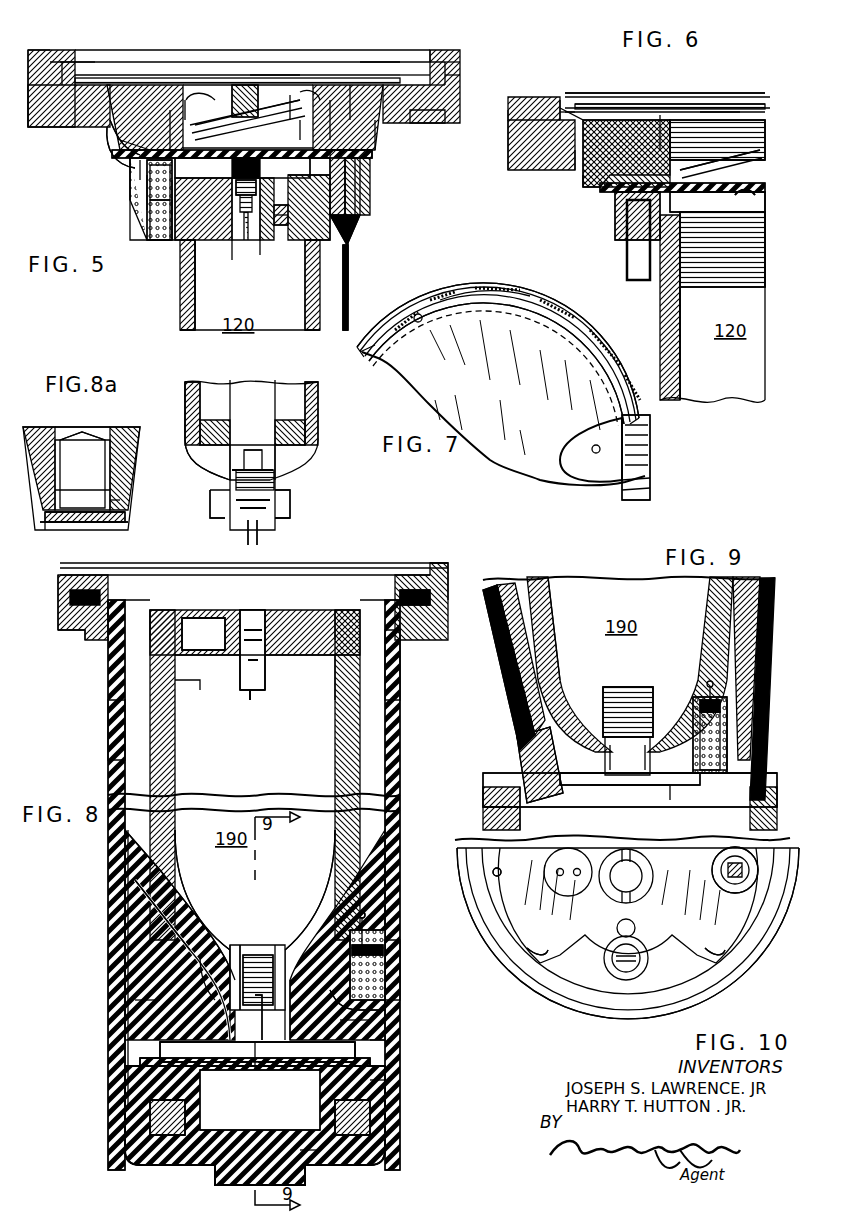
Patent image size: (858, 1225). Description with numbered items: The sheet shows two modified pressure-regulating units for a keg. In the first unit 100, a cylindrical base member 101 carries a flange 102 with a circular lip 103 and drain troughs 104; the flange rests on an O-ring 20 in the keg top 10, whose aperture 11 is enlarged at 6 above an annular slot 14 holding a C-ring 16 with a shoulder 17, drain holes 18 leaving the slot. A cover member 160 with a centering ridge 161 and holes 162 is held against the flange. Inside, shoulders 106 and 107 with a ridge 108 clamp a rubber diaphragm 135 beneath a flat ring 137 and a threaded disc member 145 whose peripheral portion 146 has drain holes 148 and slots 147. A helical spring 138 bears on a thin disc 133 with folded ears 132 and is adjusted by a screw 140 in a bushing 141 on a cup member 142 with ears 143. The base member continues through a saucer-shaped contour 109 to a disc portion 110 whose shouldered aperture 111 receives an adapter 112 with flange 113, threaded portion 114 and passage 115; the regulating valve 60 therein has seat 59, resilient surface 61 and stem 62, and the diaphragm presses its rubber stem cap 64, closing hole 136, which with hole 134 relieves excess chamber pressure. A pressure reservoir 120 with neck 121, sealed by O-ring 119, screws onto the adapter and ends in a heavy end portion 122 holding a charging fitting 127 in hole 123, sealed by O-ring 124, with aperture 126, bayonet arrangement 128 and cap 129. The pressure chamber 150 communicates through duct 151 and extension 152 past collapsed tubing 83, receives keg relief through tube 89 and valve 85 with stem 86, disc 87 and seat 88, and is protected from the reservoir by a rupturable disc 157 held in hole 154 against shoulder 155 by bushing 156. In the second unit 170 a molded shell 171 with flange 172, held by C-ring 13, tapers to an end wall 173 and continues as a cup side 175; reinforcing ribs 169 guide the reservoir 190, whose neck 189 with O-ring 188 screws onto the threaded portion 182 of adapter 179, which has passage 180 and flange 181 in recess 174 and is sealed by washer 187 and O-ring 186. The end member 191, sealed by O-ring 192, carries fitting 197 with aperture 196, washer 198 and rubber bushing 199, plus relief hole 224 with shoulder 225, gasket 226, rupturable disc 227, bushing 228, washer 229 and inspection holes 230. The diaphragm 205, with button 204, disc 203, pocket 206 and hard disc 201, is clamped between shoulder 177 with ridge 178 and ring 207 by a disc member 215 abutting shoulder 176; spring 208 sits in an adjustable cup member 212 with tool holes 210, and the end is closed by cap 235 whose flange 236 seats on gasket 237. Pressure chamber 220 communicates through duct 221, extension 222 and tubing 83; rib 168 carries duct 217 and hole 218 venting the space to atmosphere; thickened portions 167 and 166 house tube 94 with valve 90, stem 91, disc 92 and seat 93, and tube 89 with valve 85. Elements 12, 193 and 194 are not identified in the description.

In FIG. 5, the enlarged aperture portion 6 is at (70, 60).
In FIG. 6, the enlarged aperture portion 6 is at (555, 95).
In FIG. 5, the central top portion of the keg 10 is at (38, 138).
In FIG. 8, the central top portion of the keg 10 is at (74, 643).
In FIG. 5, the aperture 11 is at (458, 72).
In FIG. 8, the aperture 11 is at (62, 600).
In FIG. 5, the end cap 12 is at (428, 128).
In FIG. 8, the C-ring 13 is at (435, 560).
In FIG. 5, the annular slot 14 is at (58, 52).
In FIG. 5, the C-ring 16 is at (88, 60).
In FIG. 6, the shoulder 17 is at (565, 98).
In FIG. 5, the hole 18 is at (435, 52).
In FIG. 5, the O-ring 20 is at (440, 92).
In FIG. 6, the O-ring 20 is at (575, 172).
In FIG. 8, the O-ring 20 is at (430, 620).
In FIG. 5, the frusto-conical seat 59 is at (242, 248).
In FIG. 5, the pressure-regulating valve 60 is at (247, 245).
In FIG. 8, the pressure-regulating valve 60 is at (258, 990).
In FIG. 5, the resilient frusto-conical surface 61 is at (236, 203).
In FIG. 5, the axial stem 62 is at (255, 163).
In FIG. 6, the axial stem 62 is at (725, 205).
In FIG. 8, the axial stem 62 is at (262, 1052).
In FIG. 9, the axial stem 62 is at (660, 790).
In FIG. 5, the stem cap 64 is at (238, 164).
In FIG. 6, the stem cap 64 is at (735, 200).
In FIG. 5, the collapsed rubber tubing 83 is at (350, 298).
In FIG. 9, the collapsed rubber tubing 83 is at (505, 660).
In FIG. 5, the valve 85 is at (150, 238).
In FIG. 9, the valve 85 is at (720, 697).
In FIG. 5, the axial stem 86 is at (165, 242).
In FIG. 9, the axial stem 86 is at (730, 724).
In FIG. 5, the small disc 87 is at (172, 245).
In FIG. 9, the small disc 87 is at (735, 768).
In FIG. 5, the flange 88 is at (186, 245).
In FIG. 9, the flange 88 is at (745, 785).
In FIG. 5, the rigid tube 89 is at (155, 242).
In FIG. 6, the rigid tube 89 is at (630, 266).
In FIG. 9, the rigid tube 89 is at (725, 704).
In FIG. 8, the valve 90 is at (365, 925).
In FIG. 8, the stem 91 is at (400, 972).
In FIG. 8, the disc 92 is at (400, 990).
In FIG. 8, the valve seat 93 is at (380, 1005).
In FIG. 8, the rigid tube 94 is at (385, 950).
In FIG. 10, the rigid tube 94 is at (748, 892).
In FIG. 5, the unit 100 is at (386, 227).
In FIG. 5, the base member 101 is at (378, 162).
In FIG. 5, the flange 102 is at (66, 127).
In FIG. 6, the flange 102 is at (515, 146).
In FIG. 6, the circular lip 103 is at (512, 122).
In FIG. 7, the circular lip 103 is at (568, 312).
In FIG. 5, the channel or trough 104 is at (462, 60).
In FIG. 7, the channel or trough 104 is at (650, 448).
In FIG. 5, the outer shoulder 106 is at (140, 168).
In FIG. 5, the inner shoulder 107 is at (160, 215).
In FIG. 8, the inner shoulder 107 is at (375, 1030).
In FIG. 5, the raised circular ridge 108 is at (150, 195).
In FIG. 5, the saucer-shaped contour 109 is at (368, 176).
In FIG. 5, the disc portion 110 is at (360, 197).
In FIG. 5, the shouldered aperture 111 is at (314, 162).
In FIG. 5, the cylindrical adapter 112 is at (224, 250).
In FIG. 5, the flange 113 is at (176, 162).
In FIG. 5, the externally threaded portion 114 is at (215, 245).
In FIG. 6, the externally threaded portion 114 is at (684, 312).
In FIG. 5, the passage 115 is at (262, 262).
In FIG. 5, the O-ring 119 is at (348, 238).
In FIG. 5, the pressure reservoir 120 is at (250, 325).
In FIG. 6, the pressure reservoir 120 is at (713, 343).
In FIG. 5, the neck 121 is at (350, 268).
In FIG. 8, the end portion 122 is at (318, 452).
In FIG. 8, the axial hole 123 is at (238, 455).
In FIG. 8, the O-ring 124 is at (295, 490).
In FIG. 8, the axial aperture 126 is at (254, 448).
In FIG. 8, the fitting 127 is at (285, 455).
In FIG. 8, the bayonet arrangement 128 is at (290, 516).
In FIG. 8, the cap 129 is at (212, 518).
In FIG. 5, the ears 132 is at (308, 130).
In FIG. 5, the thin disc 133 is at (335, 120).
In FIG. 6, the central hole 134 is at (745, 173).
In FIG. 5, the diaphragm 135 is at (150, 150).
In FIG. 6, the diaphragm 135 is at (618, 220).
In FIG. 6, the central hole 136 is at (742, 196).
In FIG. 5, the flat ring 137 is at (145, 182).
In FIG. 5, the helical spring 138 is at (293, 100).
In FIG. 5, the screw 140 is at (262, 78).
In FIG. 6, the screw 140 is at (735, 110).
In FIG. 5, the threaded bushing 141 is at (248, 118).
In FIG. 5, the cup member 142 is at (242, 90).
In FIG. 6, the cup member 142 is at (745, 140).
In FIG. 5, the ears 143 is at (172, 148).
In FIG. 5, the disc member 145 is at (115, 142).
In FIG. 6, the disc member 145 is at (588, 190).
In FIG. 5, the peripheral portion 146 is at (128, 160).
In FIG. 5, the slots 147 is at (188, 110).
In FIG. 6, the slots 147 is at (668, 130).
In FIG. 5, the hole 148 is at (358, 110).
In FIG. 7, the hole 148 is at (592, 449).
In FIG. 5, the pressure chamber 150 is at (376, 134).
In FIG. 5, the duct 151 is at (375, 185).
In FIG. 5, the extension 152 is at (362, 215).
In FIG. 5, the hole 154 is at (282, 228).
In FIG. 5, the shoulder 155 is at (284, 232).
In FIG. 5, the bushing 156 is at (286, 236).
In FIG. 5, the thin disc 157 is at (290, 242).
In FIG. 5, the cover member 160 is at (390, 70).
In FIG. 6, the cover member 160 is at (670, 76).
In FIG. 7, the cover member 160 is at (534, 335).
In FIG. 6, the circular ridge 161 is at (575, 95).
In FIG. 7, the circular ridge 161 is at (496, 300).
In FIG. 5, the holes 162 is at (408, 78).
In FIG. 7, the holes 162 is at (414, 315).
In FIG. 9, the thickened portion 166 is at (740, 748).
In FIG. 8, the thickened portion 167 is at (400, 960).
In FIG. 8, the external rib 168 is at (115, 905).
In FIG. 8, the reinforcing ribs 169 is at (170, 605).
In FIG. 10, the reinforcing ribs 169 is at (528, 952).
In FIG. 8, the unit 170 is at (408, 678).
In FIG. 8, the shell 171 is at (112, 725).
In FIG. 8, the flange 172 is at (120, 600).
In FIG. 8, the end wall 173 is at (290, 950).
In FIG. 8, the recess 174 is at (320, 1012).
In FIG. 8, the cylindrical side 175 is at (400, 1090).
In FIG. 8, the second shoulder 176 is at (385, 1056).
In FIG. 9, the second shoulder 176 is at (510, 825).
In FIG. 10, the second shoulder 176 is at (628, 921).
In FIG. 8, the shoulder 177 is at (385, 1036).
In FIG. 8, the raised circular ridge 178 is at (385, 1012).
In FIG. 8, the adapter 179 is at (236, 955).
In FIG. 8, the passage 180 is at (247, 945).
In FIG. 8, the thin flange 181 is at (300, 1058).
In FIG. 8, the externally threaded portion 182 is at (276, 970).
In FIG. 9, the externally threaded portion 182 is at (636, 700).
In FIG. 8, the O-ring 186 is at (185, 1045).
In FIG. 8, the metallic washer 187 is at (200, 1015).
In FIG. 8, the O-ring 188 is at (220, 1000).
In FIG. 8, the neck 189 is at (215, 960).
In FIG. 8, the pressure reservoir 190 is at (211, 889).
In FIG. 9, the pressure reservoir 190 is at (592, 628).
In FIG. 8, the end member 191 is at (334, 660).
In FIG. 8, the O-ring 192 is at (340, 630).
In FIG. 8, the valve 193 is at (240, 660).
In FIG. 8, the seat 194 is at (320, 632).
In FIG. 8, the axial aperture 196 is at (268, 655).
In FIG. 8, the fitting 197 is at (246, 680).
In FIG. 8, the metal washer 198 is at (258, 640).
In FIG. 8, the rubber bushing 199 is at (265, 640).
In FIG. 8, the small metal disc 201 is at (215, 1048).
In FIG. 8, the thin metal disc 203 is at (368, 1170).
In FIG. 8, the central rubber button 204 is at (248, 1183).
In FIG. 8, the diaphragm 205 is at (148, 1062).
In FIG. 9, the diaphragm 205 is at (680, 800).
In FIG. 8, the flanged pocket 206 is at (165, 1168).
In FIG. 8, the flat metallic ring 207 is at (150, 1100).
In FIG. 9, the flat metallic ring 207 is at (735, 812).
In FIG. 8, the helical spring 208 is at (300, 1160).
In FIG. 8, the holes 210 is at (304, 1180).
In FIG. 8, the cup member 212 is at (204, 1168).
In FIG. 8, the disc member 215 is at (400, 1067).
In FIG. 8, the duct 217 is at (128, 925).
In FIG. 10, the duct 217 is at (510, 880).
In FIG. 8, the small hole 218 is at (140, 1122).
In FIG. 8, the pressure chamber 220 is at (125, 1108).
In FIG. 9, the pressure chamber 220 is at (574, 797).
In FIG. 9, the duct 221 is at (535, 763).
In FIG. 9, the extension 222 is at (518, 752).
In FIG. 8a, the hole 224 is at (68, 535).
In FIG. 8, the hole 224 is at (190, 655).
In FIG. 8a, the shoulder 225 is at (128, 518).
In FIG. 8a, the sealing washer 226 is at (50, 525).
In FIG. 8a, the disc 227 is at (102, 510).
In FIG. 8a, the bushing 228 is at (100, 445).
In FIG. 8a, the metallic washer 229 is at (128, 510).
In FIG. 8a, the holes 230 is at (112, 425).
In FIG. 8, the circular cap 235 is at (400, 1150).
In FIG. 8, the cylindrical flange 236 is at (400, 1118).
In FIG. 8, the sealing ring or gasket 237 is at (128, 1155).